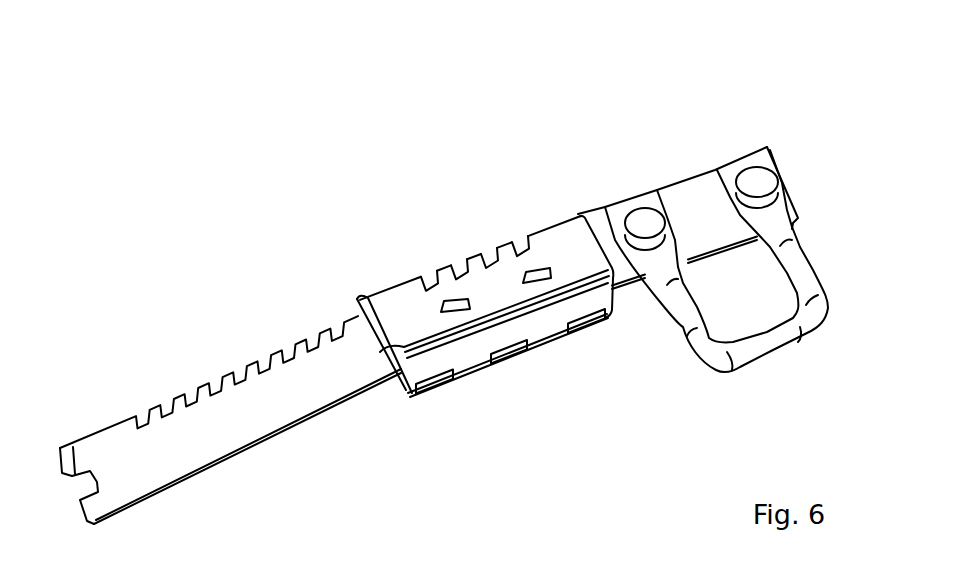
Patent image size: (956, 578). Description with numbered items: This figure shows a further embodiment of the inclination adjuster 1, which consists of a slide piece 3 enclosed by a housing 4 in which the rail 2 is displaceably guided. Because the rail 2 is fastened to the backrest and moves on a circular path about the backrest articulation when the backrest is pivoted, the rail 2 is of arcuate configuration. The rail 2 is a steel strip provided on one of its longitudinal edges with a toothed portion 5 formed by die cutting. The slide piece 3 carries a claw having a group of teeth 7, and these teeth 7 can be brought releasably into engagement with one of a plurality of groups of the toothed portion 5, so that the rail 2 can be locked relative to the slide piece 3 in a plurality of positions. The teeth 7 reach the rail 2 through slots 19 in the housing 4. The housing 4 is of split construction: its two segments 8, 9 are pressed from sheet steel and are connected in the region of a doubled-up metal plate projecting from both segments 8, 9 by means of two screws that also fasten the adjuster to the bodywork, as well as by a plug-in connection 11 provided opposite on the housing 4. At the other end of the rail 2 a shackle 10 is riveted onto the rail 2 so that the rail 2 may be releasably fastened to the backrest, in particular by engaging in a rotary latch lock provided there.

The inclination adjuster 1 is at (444, 284).
The rail 2 is at (228, 417).
The slide piece 3 is at (554, 366).
The housing 4 is at (553, 245).
The toothed portion 5 is at (155, 412).
The teeth 7 is at (457, 277).
The segment 8 is at (470, 357).
The segment 9 is at (393, 344).
The shackle 10 is at (683, 327).
The plug-in connection 11 is at (440, 307).
The slots 19 is at (482, 250).